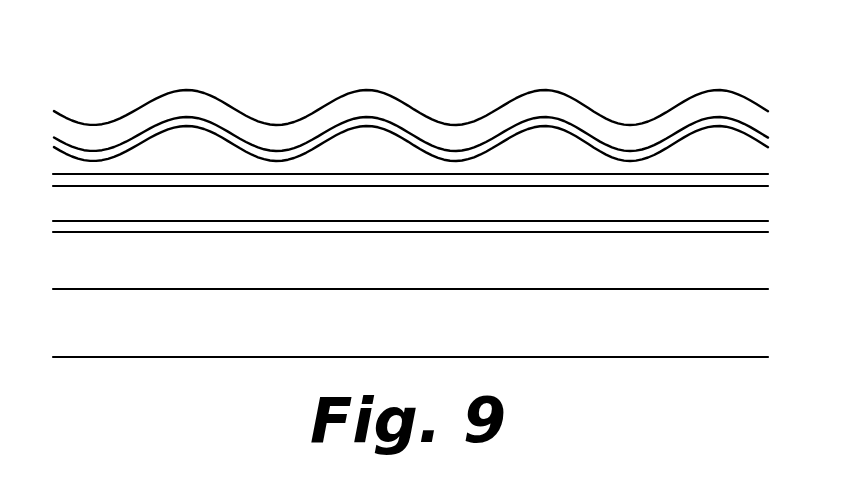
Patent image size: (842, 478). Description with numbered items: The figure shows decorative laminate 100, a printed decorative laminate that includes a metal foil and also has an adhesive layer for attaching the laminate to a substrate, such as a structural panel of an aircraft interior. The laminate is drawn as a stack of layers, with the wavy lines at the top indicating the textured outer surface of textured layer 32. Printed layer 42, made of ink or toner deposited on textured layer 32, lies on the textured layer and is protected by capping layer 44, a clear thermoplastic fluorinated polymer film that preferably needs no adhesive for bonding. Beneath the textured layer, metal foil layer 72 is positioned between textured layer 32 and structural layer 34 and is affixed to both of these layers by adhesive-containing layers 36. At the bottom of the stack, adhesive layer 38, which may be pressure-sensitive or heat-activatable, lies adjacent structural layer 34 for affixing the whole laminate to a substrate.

The decorative laminate 100 is at (291, 80).
The capping layer 44 is at (174, 108).
The printed layer 42 is at (137, 138).
The metal foil layer 72 is at (377, 205).
The textured layer 32 is at (525, 155).
The structural layer 34 is at (578, 262).
The adhesive-containing layer 36 is at (660, 230).
The adhesive layer 38 is at (690, 325).